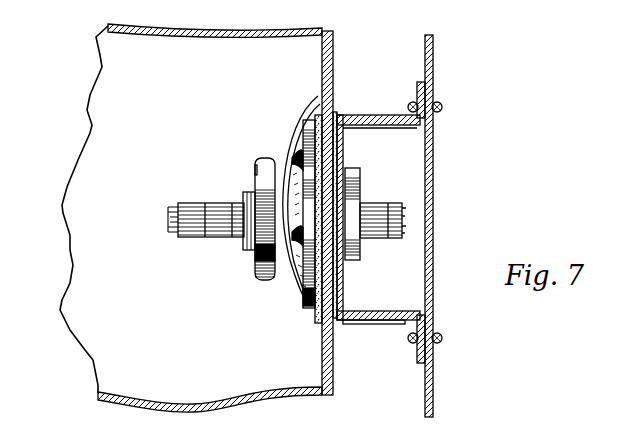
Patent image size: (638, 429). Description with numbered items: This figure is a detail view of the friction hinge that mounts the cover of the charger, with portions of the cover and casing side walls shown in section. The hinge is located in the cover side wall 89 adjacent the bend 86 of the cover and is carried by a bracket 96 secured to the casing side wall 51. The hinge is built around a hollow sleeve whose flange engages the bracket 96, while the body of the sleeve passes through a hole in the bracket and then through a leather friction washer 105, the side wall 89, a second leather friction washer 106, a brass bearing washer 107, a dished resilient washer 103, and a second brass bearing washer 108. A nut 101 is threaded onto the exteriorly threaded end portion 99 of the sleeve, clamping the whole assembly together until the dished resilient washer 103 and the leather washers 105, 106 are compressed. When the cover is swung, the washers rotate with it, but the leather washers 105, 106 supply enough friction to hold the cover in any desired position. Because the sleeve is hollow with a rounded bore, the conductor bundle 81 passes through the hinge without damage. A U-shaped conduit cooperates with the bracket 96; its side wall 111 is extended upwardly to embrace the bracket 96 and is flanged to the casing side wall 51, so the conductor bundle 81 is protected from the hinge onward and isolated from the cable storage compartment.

The bend 86 is at (161, 185).
The side wall 89 is at (334, 42).
The side wall 51 is at (434, 172).
The side wall 111 is at (351, 113).
The bracket 96 is at (396, 131).
The nut 101 is at (260, 174).
The leather friction washer 105 is at (338, 112).
The brass bearing washer 107 is at (312, 114).
The dished resilient washer 103 is at (301, 127).
The leather friction washer 106 is at (319, 113).
The brass bearing washer 108 is at (293, 150).
The threaded end portion 99 is at (224, 201).
The conductor bundle 81 is at (217, 206).